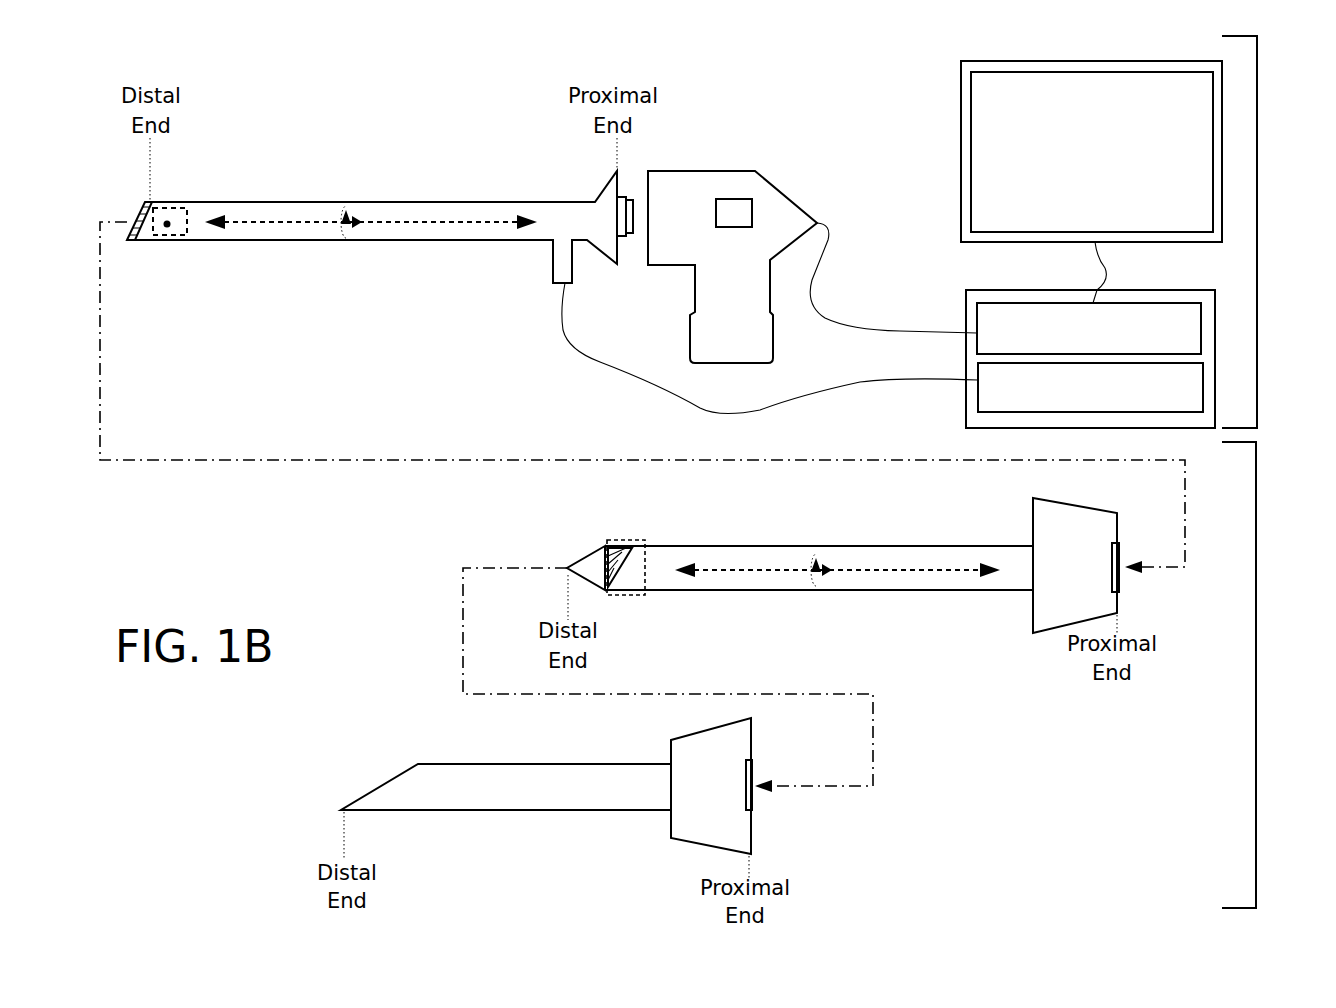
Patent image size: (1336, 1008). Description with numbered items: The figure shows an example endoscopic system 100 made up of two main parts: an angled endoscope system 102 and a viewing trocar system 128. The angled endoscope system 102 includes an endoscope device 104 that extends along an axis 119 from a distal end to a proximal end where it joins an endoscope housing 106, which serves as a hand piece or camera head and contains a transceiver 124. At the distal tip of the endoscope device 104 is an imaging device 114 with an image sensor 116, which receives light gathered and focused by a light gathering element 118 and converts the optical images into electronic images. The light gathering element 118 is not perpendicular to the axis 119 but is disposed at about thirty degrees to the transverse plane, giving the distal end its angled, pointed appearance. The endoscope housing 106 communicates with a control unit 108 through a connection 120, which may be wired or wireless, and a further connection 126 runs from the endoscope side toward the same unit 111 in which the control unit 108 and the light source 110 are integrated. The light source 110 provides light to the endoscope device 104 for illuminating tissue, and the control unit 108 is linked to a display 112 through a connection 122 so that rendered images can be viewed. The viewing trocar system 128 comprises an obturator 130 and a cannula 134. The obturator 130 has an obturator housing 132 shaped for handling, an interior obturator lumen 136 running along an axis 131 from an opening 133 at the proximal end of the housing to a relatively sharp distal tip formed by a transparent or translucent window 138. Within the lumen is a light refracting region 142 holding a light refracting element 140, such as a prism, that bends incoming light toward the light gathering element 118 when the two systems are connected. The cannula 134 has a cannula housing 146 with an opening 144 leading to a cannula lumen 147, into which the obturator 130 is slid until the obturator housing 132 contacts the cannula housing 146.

The endoscopic system 100 is at (168, 36).
The angled endoscope system 102 is at (1257, 238).
The endoscope device 104 is at (384, 217).
The endoscope housing 106 is at (763, 250).
The control unit 108 is at (1089, 328).
The light source 110 is at (1090, 387).
The unit 111 is at (1027, 367).
The display 112 is at (1091, 151).
The imaging device 114 is at (213, 197).
The image sensor 116 is at (219, 247).
The light gathering element 118 is at (110, 204).
The axis 119 is at (371, 238).
The connection 120 is at (893, 278).
The connection 122 is at (1137, 272).
The transceiver 124 is at (692, 250).
The cable 126 is at (770, 349).
The viewing trocar system 128 is at (1256, 672).
The obturator 130 is at (819, 543).
The axis 131 is at (874, 585).
The obturator housing 132 is at (1037, 562).
The opening 133 is at (1167, 577).
The cannula 134 is at (506, 763).
The obturator lumen 136 is at (837, 541).
The window 138 is at (546, 554).
The light refracting element 140 is at (556, 531).
The light refracting region 142 is at (673, 593).
The opening 144 is at (800, 795).
The cannula housing 146 is at (671, 786).
The cannula lumen 147 is at (587, 771).